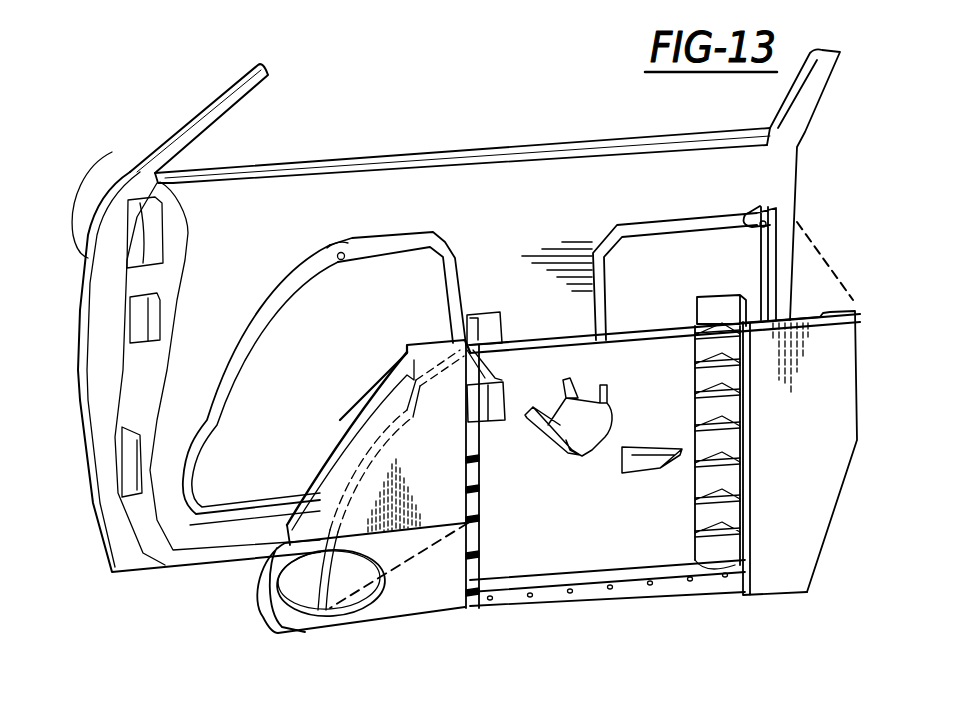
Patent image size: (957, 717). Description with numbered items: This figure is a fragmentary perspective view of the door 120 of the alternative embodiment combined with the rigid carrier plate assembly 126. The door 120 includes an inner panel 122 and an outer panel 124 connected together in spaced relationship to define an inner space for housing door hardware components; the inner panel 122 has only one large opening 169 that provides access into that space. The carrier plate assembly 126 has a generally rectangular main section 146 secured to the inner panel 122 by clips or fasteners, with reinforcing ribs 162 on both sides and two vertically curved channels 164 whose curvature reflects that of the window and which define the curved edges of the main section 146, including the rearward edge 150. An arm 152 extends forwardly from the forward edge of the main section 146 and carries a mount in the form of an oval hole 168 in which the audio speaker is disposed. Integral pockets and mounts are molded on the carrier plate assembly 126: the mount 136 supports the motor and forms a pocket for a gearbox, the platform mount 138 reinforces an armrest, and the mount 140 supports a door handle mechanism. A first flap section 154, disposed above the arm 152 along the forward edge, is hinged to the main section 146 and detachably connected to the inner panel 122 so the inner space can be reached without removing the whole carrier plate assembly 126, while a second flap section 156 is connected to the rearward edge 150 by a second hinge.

The door 120 is at (161, 121).
The inner panel 122 is at (358, 170).
The outer panel 124 is at (77, 217).
The carrier plate assembly 126 is at (595, 612).
The mount 136 is at (562, 402).
The platform mount 138 is at (653, 470).
The mount 140 is at (550, 418).
The main section 146 is at (513, 600).
The rearward edge 150 is at (765, 578).
The arm 152 is at (400, 610).
The first flap section 154 is at (400, 413).
The second flap section 156 is at (811, 527).
The reinforcing ribs 162 is at (697, 390).
The vertically curved channels 164 is at (478, 318).
The oval hole 168 is at (280, 633).
The large opening 169 is at (268, 322).